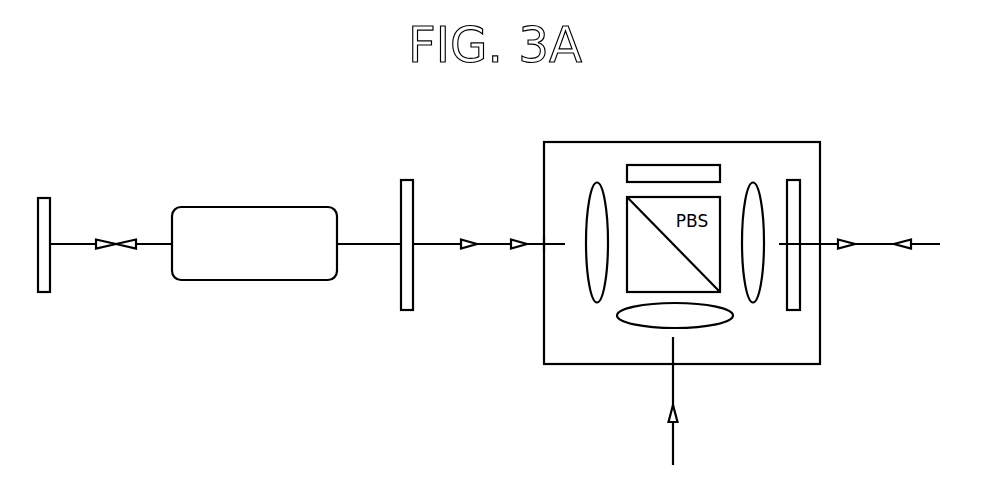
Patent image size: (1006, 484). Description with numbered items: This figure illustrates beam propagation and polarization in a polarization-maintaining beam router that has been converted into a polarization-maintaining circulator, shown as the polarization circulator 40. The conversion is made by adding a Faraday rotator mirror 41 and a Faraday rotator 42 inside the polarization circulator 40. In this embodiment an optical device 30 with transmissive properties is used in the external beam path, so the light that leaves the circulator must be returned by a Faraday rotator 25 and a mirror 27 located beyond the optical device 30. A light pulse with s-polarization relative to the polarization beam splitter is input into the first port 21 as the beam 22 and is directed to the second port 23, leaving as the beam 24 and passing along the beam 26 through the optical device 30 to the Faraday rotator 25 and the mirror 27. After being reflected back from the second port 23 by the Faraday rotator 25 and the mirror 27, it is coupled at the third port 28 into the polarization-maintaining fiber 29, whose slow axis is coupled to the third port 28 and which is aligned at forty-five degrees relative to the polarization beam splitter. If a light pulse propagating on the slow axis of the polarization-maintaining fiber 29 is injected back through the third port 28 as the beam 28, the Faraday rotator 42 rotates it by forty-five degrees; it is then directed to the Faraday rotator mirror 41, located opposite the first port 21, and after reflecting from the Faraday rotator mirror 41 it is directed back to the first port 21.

The first port 21 is at (674, 365).
The emitted light beam 22 is at (675, 445).
The second port 23 is at (543, 244).
The output light beam 24 is at (503, 248).
The Faraday rotator 25 is at (411, 180).
The light beam 26 is at (441, 248).
The mirror 27 is at (47, 197).
The third port 28 is at (820, 244).
The polarization-maintaining fiber 29 is at (930, 244).
The optical device 30 is at (255, 207).
The polarization circulator 40 is at (813, 142).
The Faraday rotator mirror 41 is at (672, 165).
The Faraday rotator 42 is at (800, 197).